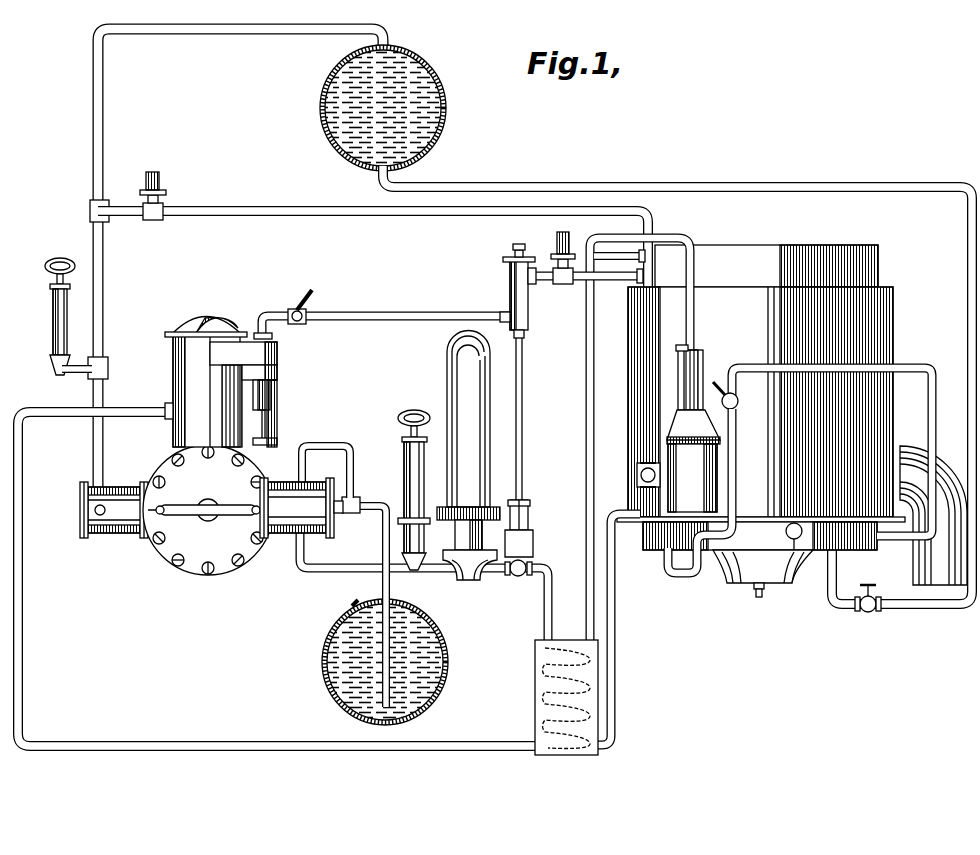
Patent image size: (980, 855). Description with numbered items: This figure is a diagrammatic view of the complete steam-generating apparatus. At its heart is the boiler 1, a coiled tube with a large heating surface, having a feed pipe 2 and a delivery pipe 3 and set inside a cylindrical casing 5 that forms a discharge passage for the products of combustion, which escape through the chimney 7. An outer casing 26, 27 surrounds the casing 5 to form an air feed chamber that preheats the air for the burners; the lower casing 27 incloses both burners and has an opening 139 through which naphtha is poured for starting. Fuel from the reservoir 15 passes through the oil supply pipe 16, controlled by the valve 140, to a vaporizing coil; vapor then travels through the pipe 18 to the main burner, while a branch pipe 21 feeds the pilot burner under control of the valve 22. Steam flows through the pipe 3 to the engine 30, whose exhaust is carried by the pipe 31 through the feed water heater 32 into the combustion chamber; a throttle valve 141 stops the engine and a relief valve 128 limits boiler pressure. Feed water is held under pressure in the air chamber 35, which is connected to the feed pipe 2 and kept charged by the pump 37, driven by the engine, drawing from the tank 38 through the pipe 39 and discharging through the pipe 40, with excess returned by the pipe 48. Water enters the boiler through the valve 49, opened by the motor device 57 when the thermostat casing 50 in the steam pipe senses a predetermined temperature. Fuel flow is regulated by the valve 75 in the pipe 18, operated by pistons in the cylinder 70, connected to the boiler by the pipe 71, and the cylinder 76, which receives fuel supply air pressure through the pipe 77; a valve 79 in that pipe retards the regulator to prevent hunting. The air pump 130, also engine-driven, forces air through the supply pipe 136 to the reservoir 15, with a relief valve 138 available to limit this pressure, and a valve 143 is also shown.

The boiler 1 is at (767, 437).
The feed pipe 2 is at (613, 547).
The delivery pipe 3 is at (340, 313).
The cylindrical casing 5 is at (876, 268).
The chimney 7 is at (933, 515).
The fuel reservoir 15 is at (446, 106).
The oil supply pipe 16 is at (500, 183).
The vapor conveying pipe 18 is at (737, 489).
The branch pipe 21 is at (721, 582).
The valve 22 is at (762, 592).
The outer casing 26 is at (894, 322).
The lower casing 27 is at (864, 549).
The engine 30 is at (173, 358).
The exhaust pipe 31 is at (638, 250).
The feed water heater 32 is at (537, 680).
The air chamber 35 is at (490, 406).
The pump 37 is at (308, 506).
The tank 38 is at (448, 641).
The pipe 39 is at (389, 582).
The pipe 40 is at (303, 569).
The pipe 48 is at (333, 446).
The valve 49 is at (511, 578).
The casing 50 is at (531, 304).
The motor device 57 is at (529, 520).
The cylinder 70 is at (693, 394).
The pipe 71 is at (696, 330).
The valve 75 is at (738, 401).
The cylinder 76 is at (692, 478).
The pipe 77 is at (264, 208).
The valve 79 is at (636, 478).
The relief valve 128 is at (571, 241).
The air pump 130 is at (115, 531).
The supply pipe 136 is at (104, 107).
The relief valve 138 is at (163, 188).
The opening 139 is at (796, 546).
The valve 140 is at (402, 450).
The throttle valve 141 is at (297, 302).
The valve 143 is at (866, 613).